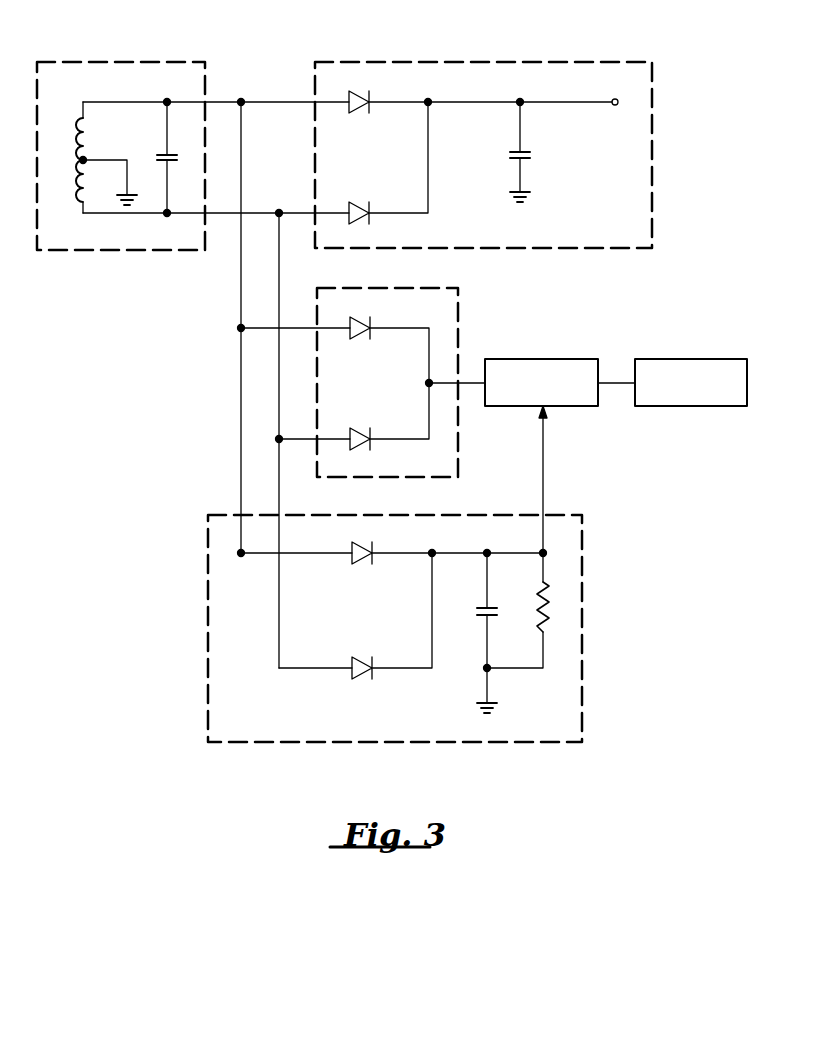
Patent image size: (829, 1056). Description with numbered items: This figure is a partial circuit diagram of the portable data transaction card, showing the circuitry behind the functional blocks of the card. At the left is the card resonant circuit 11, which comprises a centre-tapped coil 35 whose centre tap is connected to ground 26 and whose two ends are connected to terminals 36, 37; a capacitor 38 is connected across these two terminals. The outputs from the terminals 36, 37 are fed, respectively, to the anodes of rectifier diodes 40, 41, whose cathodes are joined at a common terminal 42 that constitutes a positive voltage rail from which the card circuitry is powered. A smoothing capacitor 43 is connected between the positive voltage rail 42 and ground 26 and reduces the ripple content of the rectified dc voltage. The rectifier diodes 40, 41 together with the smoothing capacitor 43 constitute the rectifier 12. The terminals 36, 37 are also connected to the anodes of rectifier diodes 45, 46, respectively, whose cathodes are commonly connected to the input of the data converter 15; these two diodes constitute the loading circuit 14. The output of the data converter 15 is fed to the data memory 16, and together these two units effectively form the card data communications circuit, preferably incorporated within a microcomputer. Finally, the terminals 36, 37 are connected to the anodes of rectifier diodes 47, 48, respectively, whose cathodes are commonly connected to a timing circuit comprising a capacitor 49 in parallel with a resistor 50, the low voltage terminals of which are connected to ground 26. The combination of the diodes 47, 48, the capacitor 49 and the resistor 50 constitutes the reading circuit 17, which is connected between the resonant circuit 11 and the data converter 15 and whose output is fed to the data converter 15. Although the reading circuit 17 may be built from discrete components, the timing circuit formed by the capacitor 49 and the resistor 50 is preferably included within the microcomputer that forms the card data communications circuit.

The resonant circuit 11 is at (145, 62).
The rectifier 12 is at (435, 60).
The loading circuit 14 is at (462, 305).
The data converter 15 is at (569, 360).
The data memory 16 is at (694, 360).
The reading circuit 17 is at (208, 620).
The ground 26 is at (138, 194).
The centre-tapped coil 35 is at (78, 128).
The terminal 36 is at (167, 100).
The terminal 37 is at (165, 215).
The capacitor 38 is at (160, 152).
The rectifier diode 40 is at (370, 105).
The rectifier diode 41 is at (370, 208).
The common terminal 42 is at (615, 106).
The smoothing capacitor 43 is at (524, 154).
The rectifier diode 45 is at (371, 332).
The rectifier diode 46 is at (372, 435).
The rectifier diode 47 is at (373, 556).
The rectifier diode 48 is at (373, 672).
The capacitor 49 is at (481, 606).
The resistor 50 is at (548, 610).